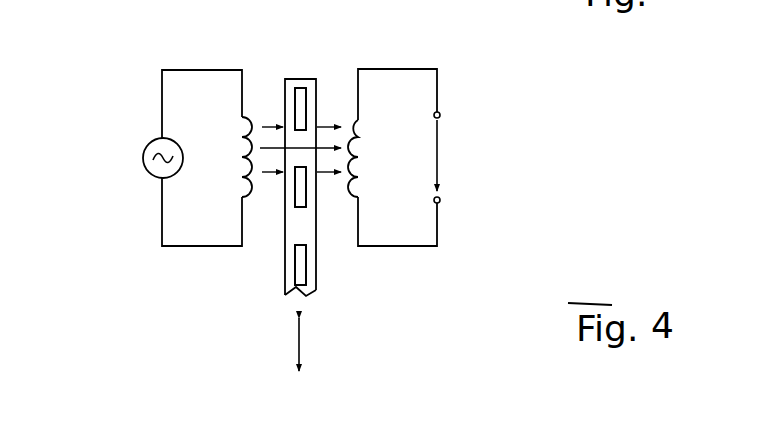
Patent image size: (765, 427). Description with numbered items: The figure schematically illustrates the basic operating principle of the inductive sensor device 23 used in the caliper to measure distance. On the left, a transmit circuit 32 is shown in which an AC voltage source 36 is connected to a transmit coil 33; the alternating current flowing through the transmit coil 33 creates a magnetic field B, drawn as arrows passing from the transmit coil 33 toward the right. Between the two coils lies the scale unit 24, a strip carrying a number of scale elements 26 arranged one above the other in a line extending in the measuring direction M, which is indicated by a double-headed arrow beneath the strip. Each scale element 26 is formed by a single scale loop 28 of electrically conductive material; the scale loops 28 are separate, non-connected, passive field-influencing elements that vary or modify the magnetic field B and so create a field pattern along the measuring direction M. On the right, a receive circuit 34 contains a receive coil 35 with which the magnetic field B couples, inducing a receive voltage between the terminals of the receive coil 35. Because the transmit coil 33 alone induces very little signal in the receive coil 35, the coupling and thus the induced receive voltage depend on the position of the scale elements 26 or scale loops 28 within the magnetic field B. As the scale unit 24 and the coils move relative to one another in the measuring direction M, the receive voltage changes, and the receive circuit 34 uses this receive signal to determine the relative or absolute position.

The inductive sensor device 23 is at (555, 89).
The scale unit 24 is at (304, 63).
The scale elements 26 is at (305, 262).
The scale loop 28 is at (349, 191).
The transmit circuit 32 is at (145, 50).
The transmit coil 33 is at (240, 134).
The receive circuit 34 is at (458, 66).
The receive coil 35 is at (360, 150).
The AC voltage source 36 is at (142, 158).
The magnetic field B is at (262, 122).
The measuring direction M is at (302, 350).